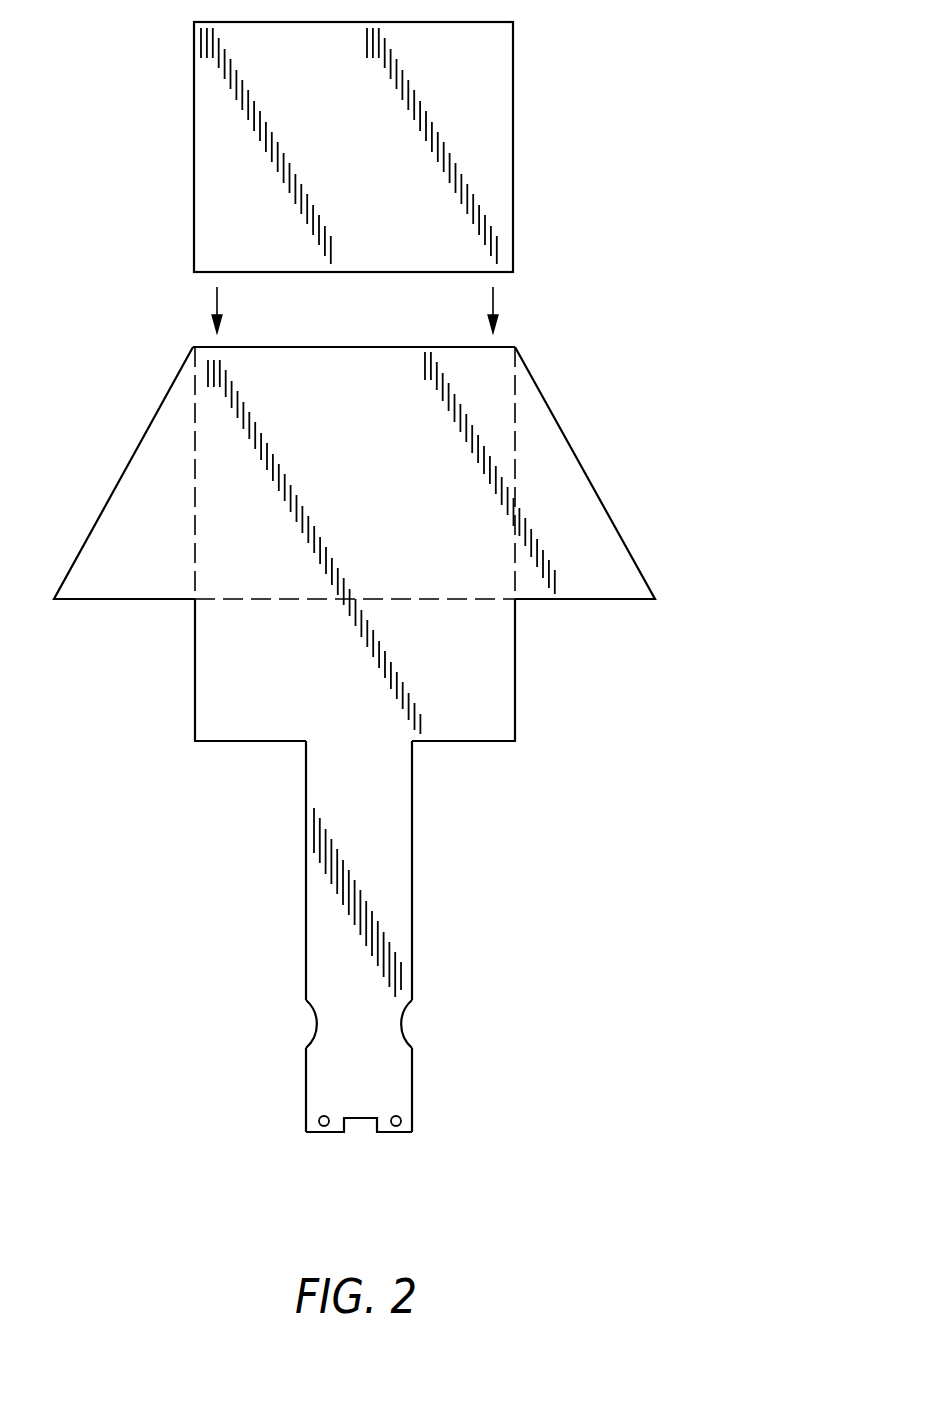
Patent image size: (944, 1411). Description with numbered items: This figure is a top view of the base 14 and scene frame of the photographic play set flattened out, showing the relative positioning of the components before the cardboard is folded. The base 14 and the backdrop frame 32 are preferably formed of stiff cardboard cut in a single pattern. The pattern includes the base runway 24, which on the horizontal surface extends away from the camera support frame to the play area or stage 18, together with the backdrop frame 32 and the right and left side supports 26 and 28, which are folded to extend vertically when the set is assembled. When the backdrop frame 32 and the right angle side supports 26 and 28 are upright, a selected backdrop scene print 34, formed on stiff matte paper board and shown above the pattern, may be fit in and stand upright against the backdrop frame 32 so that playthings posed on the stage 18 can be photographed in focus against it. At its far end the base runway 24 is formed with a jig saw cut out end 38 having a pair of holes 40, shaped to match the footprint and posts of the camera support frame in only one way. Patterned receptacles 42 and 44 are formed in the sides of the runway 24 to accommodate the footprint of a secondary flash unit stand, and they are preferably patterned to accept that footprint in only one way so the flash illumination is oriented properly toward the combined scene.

The base 14 is at (146, 823).
The stage 18 is at (493, 673).
The base runway 24 is at (397, 883).
The right side support 26 is at (117, 507).
The left side support 28 is at (572, 472).
The backdrop frame 32 is at (488, 362).
The backdrop scene print 34 is at (515, 155).
The cut out end 38 is at (420, 1120).
The holes 40 is at (396, 1127).
The patterned receptacle 42 is at (307, 1026).
The patterned receptacle 44 is at (415, 1027).